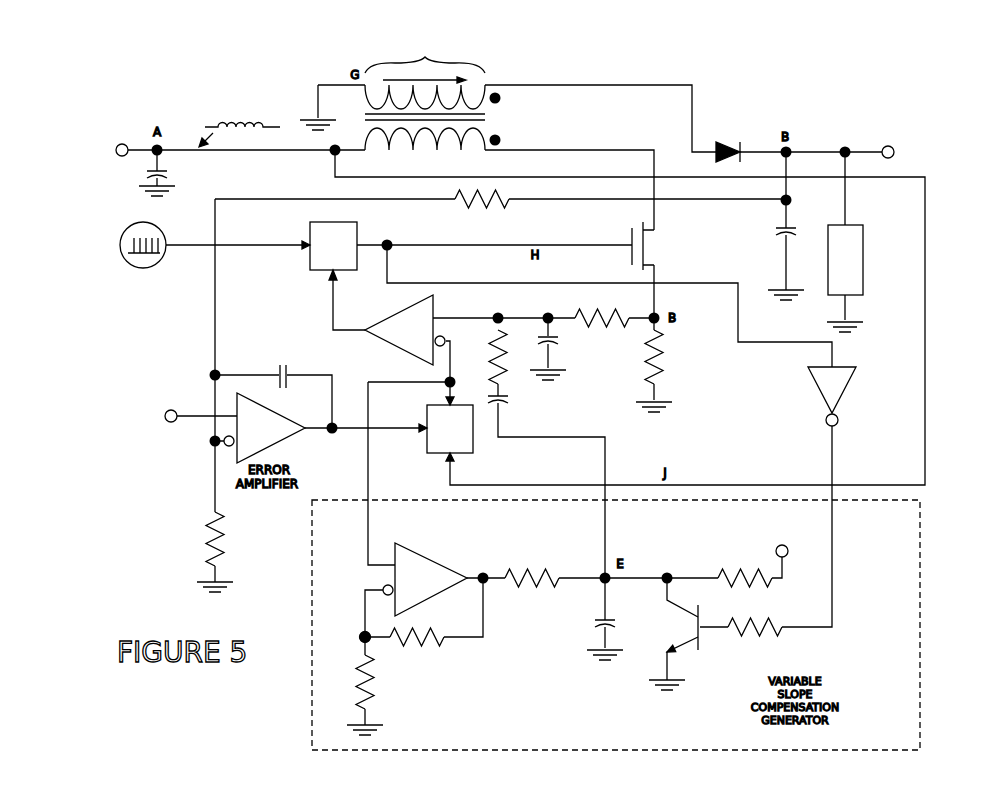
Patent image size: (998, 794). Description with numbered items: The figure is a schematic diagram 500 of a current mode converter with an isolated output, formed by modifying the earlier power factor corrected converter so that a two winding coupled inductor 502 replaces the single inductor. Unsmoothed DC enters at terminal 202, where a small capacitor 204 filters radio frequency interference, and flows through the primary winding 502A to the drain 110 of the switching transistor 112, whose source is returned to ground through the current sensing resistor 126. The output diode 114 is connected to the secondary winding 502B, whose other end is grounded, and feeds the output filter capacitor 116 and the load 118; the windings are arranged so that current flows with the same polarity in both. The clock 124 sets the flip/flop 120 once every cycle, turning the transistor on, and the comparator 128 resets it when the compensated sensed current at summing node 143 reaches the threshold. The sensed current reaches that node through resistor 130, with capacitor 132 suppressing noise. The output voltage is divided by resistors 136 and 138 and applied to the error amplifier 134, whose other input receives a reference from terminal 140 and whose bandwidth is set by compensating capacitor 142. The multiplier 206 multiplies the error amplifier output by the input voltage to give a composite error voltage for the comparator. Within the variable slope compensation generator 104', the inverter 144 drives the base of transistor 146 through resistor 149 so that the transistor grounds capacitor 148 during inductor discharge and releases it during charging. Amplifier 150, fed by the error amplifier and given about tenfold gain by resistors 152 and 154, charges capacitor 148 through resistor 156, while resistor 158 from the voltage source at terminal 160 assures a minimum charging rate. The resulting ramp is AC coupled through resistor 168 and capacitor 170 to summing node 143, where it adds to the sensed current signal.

The schematic diagram 500 is at (590, 67).
The terminal 202 is at (119, 147).
The small capacitor 204 is at (150, 167).
The two winding coupled inductor 502 is at (425, 79).
The secondary winding 502B is at (486, 86).
The primary winding 502A is at (486, 132).
The output diode 114 is at (742, 138).
The resistor 136 is at (505, 206).
The switching transistor 112 is at (628, 238).
The drain 110 is at (655, 232).
The output filter capacitor 116 is at (780, 232).
The load 118 is at (865, 245).
The clock 124 is at (142, 268).
The flip/flop 120 is at (310, 270).
The comparator 128 is at (400, 350).
The summing node 143 is at (496, 316).
The resistor 130 is at (575, 313).
The capacitor 132 is at (568, 345).
The current sensing resistor 126 is at (668, 358).
The compensating capacitor 142 is at (282, 368).
The terminal 140 is at (166, 425).
The error amplifier 134 is at (285, 440).
The resistor 168 is at (508, 365).
The capacitor 170 is at (508, 403).
The multiplier 206 is at (427, 452).
The inverter 144 is at (846, 393).
The resistor 138 is at (200, 545).
The variable slope compensation generator 104' is at (651, 609).
The resistor 156 is at (508, 567).
The amplifier 150 is at (364, 618).
The resistor 152 is at (435, 650).
The resistor 154 is at (378, 690).
The capacitor 148 is at (596, 628).
The terminal 160 is at (781, 545).
The resistor 158 is at (760, 592).
The resistor 149 is at (780, 640).
The switching transistor 146 is at (700, 650).